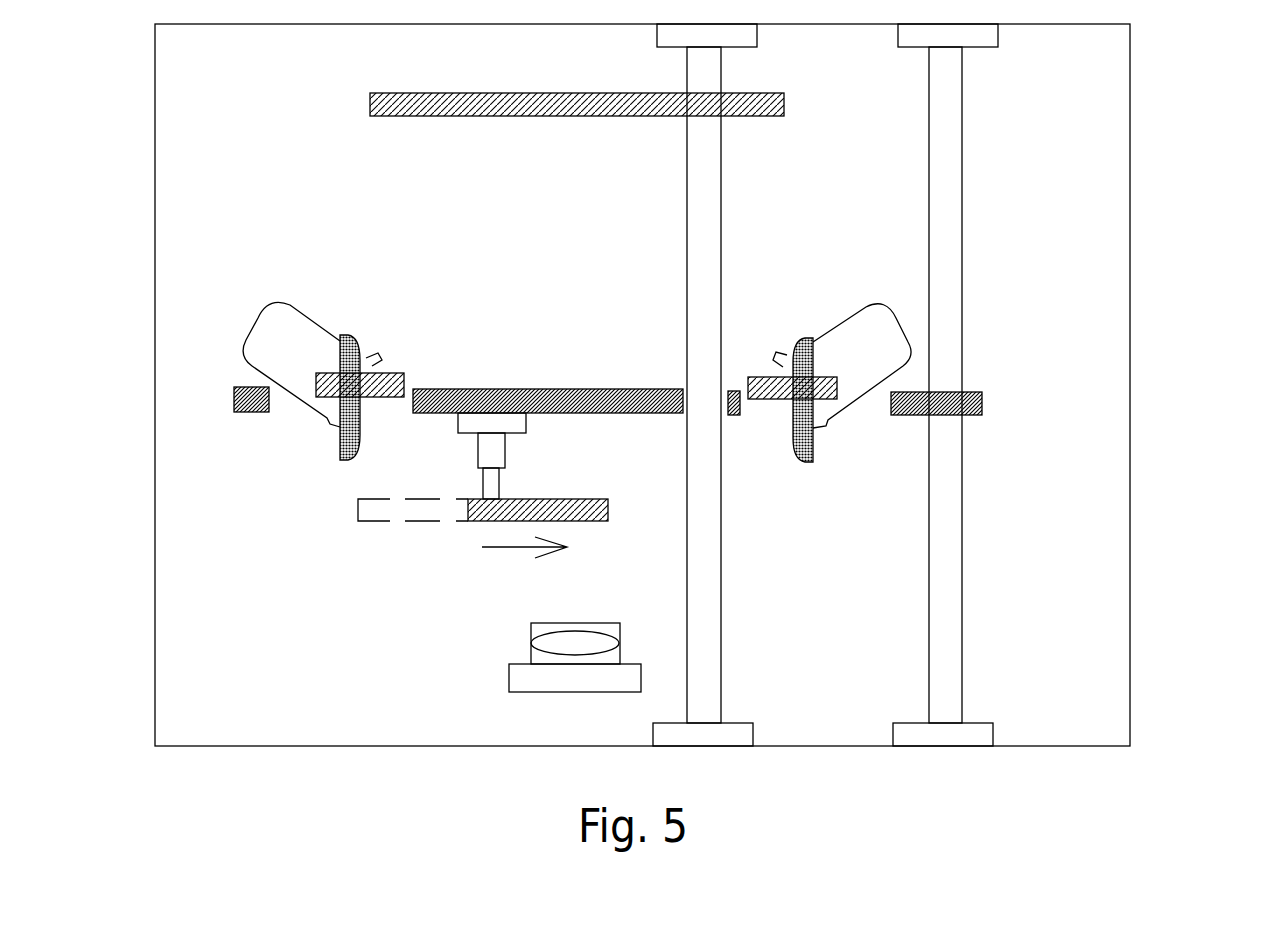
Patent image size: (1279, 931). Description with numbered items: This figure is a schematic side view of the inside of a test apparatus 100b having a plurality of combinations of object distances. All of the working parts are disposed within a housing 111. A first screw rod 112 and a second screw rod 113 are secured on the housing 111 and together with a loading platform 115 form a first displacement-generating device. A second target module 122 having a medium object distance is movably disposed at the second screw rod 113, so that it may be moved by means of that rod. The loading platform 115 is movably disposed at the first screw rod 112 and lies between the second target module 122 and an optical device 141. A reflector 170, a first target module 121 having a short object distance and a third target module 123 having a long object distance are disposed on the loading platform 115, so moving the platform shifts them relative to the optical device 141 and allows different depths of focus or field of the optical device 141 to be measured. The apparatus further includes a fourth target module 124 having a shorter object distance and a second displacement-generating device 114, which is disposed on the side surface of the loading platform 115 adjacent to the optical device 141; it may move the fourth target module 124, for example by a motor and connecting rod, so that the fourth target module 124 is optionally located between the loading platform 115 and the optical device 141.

The test apparatus having a plurality of combinations of object distances 100b is at (1250, 135).
The housing 111 is at (1130, 387).
The first screw rod 112 is at (962, 570).
The second screw rod 113 is at (721, 565).
The second displacement-generating device 114 is at (490, 446).
The loading platform 115 is at (982, 403).
The first target module 121 is at (404, 374).
The second target module 122 is at (773, 100).
The third target module 123 is at (284, 318).
The fourth target module 124 is at (483, 512).
The optical device 141 is at (583, 679).
The reflector 170 is at (338, 447).